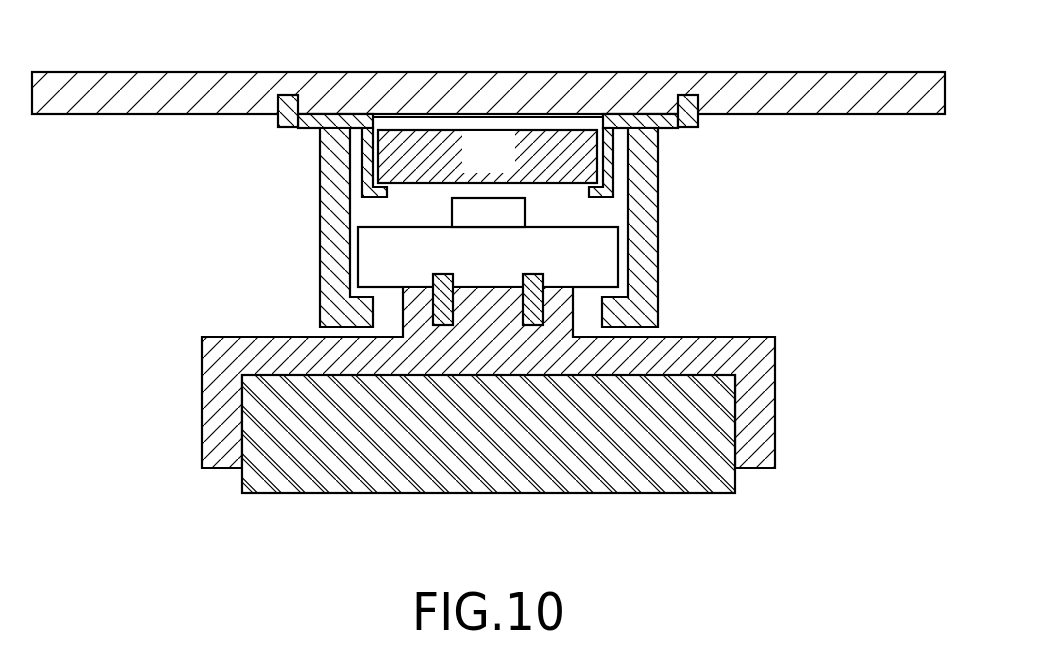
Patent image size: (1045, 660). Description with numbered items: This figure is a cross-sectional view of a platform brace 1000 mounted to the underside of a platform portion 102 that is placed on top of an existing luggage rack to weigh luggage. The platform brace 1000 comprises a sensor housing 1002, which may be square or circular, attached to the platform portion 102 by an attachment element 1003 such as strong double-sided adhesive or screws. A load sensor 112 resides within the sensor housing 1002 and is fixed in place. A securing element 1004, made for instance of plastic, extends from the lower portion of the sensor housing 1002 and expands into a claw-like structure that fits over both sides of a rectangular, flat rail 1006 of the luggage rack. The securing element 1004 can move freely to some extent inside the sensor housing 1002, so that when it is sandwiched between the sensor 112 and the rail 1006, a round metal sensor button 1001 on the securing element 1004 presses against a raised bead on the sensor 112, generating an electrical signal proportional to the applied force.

The platform portion 102 is at (172, 98).
The load sensor 112 is at (508, 169).
The platform brace 1000 is at (825, 117).
The sensor button 1001 is at (470, 213).
The sensor housing 1002 is at (718, 117).
The attachment element 1003 is at (289, 107).
The securing element 1004 is at (272, 352).
The rail 1006 is at (577, 463).